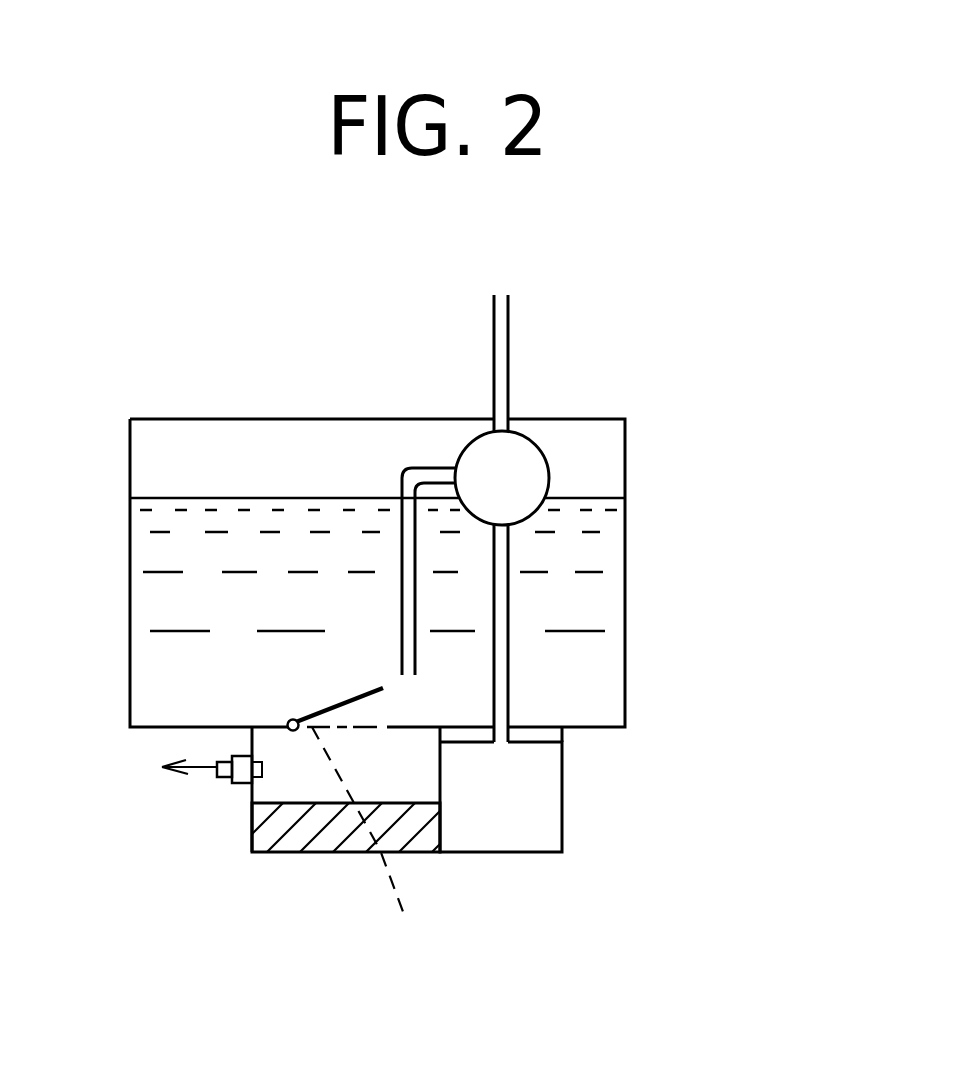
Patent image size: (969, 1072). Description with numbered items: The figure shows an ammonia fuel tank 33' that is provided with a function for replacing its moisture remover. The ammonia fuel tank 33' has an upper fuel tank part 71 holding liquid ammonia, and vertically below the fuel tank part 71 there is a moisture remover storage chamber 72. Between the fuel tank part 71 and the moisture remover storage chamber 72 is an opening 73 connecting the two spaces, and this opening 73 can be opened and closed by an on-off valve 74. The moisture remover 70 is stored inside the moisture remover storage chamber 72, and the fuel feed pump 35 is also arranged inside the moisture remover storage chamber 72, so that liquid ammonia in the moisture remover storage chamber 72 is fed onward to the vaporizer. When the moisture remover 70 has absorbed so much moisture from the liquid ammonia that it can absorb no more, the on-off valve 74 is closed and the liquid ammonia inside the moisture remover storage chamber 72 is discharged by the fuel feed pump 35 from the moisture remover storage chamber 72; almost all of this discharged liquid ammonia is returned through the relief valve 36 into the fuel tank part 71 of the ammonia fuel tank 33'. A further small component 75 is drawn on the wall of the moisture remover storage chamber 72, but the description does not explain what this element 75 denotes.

The ammonia fuel tank 33' is at (520, 518).
The fuel tank part 71 is at (625, 462).
The relief valve 36 is at (533, 440).
The on-off valve 74 is at (320, 712).
The opening 73 is at (377, 849).
The moisture remover 70 is at (252, 837).
The moisture remover storage chamber 72 is at (315, 852).
The sensor 75 is at (233, 787).
The fuel feed pump 35 is at (548, 826).